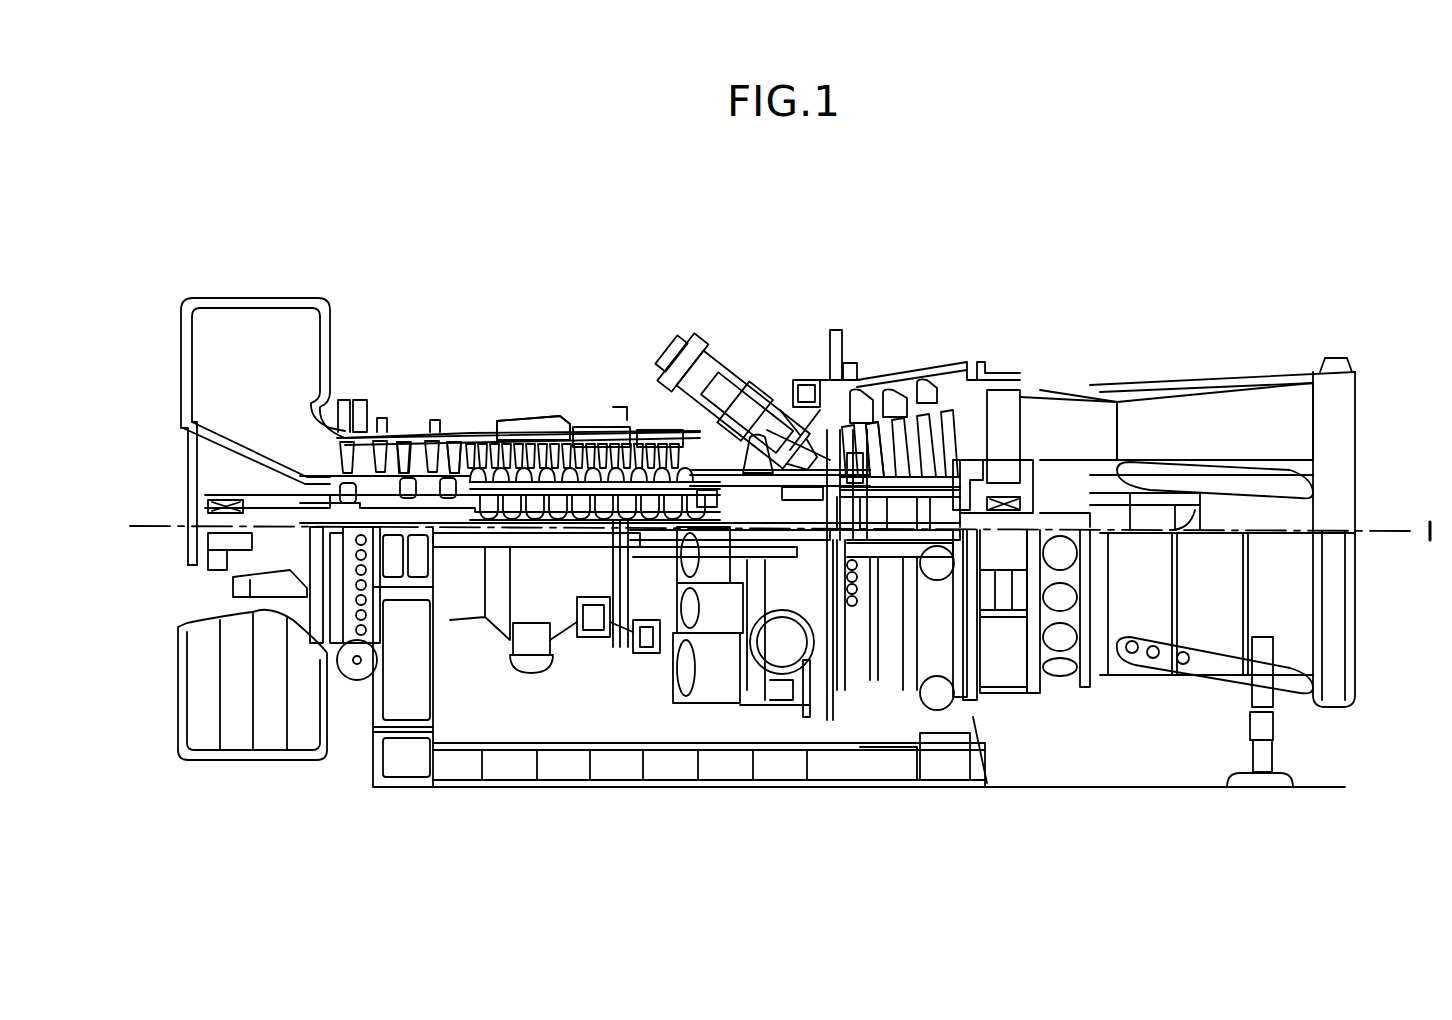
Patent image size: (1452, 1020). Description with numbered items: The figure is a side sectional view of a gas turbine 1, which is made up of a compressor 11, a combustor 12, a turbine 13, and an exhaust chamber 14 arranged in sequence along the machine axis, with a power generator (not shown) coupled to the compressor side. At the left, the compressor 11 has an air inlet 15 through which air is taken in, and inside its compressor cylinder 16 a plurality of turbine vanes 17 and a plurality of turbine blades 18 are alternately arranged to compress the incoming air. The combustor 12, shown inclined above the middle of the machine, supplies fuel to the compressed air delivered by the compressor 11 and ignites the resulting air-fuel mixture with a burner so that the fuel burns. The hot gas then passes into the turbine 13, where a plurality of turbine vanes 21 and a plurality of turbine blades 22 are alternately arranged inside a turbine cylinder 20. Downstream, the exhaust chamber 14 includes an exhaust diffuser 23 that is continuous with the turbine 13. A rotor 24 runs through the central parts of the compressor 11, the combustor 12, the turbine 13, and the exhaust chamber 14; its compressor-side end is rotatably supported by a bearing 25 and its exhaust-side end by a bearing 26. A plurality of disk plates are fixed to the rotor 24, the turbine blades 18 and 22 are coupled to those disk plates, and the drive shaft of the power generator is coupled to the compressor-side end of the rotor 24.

The gas turbine 1 is at (957, 292).
The compressor 11 is at (412, 378).
The combustor 12 is at (712, 338).
The turbine 13 is at (988, 355).
The exhaust chamber 14 is at (1203, 368).
The air inlet 15 is at (198, 362).
The compressor cylinder 16 is at (458, 438).
The turbine vanes 17 is at (406, 443).
The turbine blades 18 is at (480, 427).
The turbine cylinder 20 is at (910, 386).
The turbine vanes 21 is at (862, 396).
The turbine blades 22 is at (827, 375).
The exhaust diffuser 23 is at (1070, 418).
The rotor 24 is at (736, 502).
The bearing 25 is at (212, 500).
The bearing 26 is at (1313, 475).